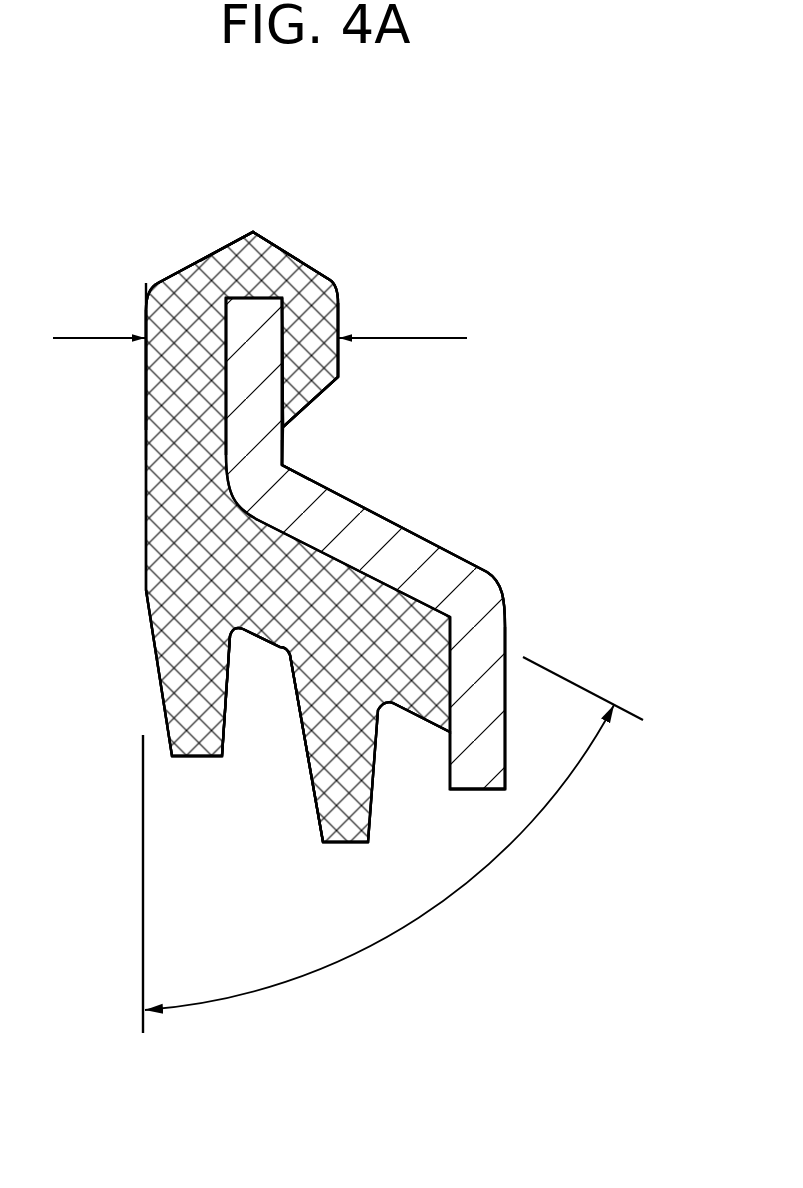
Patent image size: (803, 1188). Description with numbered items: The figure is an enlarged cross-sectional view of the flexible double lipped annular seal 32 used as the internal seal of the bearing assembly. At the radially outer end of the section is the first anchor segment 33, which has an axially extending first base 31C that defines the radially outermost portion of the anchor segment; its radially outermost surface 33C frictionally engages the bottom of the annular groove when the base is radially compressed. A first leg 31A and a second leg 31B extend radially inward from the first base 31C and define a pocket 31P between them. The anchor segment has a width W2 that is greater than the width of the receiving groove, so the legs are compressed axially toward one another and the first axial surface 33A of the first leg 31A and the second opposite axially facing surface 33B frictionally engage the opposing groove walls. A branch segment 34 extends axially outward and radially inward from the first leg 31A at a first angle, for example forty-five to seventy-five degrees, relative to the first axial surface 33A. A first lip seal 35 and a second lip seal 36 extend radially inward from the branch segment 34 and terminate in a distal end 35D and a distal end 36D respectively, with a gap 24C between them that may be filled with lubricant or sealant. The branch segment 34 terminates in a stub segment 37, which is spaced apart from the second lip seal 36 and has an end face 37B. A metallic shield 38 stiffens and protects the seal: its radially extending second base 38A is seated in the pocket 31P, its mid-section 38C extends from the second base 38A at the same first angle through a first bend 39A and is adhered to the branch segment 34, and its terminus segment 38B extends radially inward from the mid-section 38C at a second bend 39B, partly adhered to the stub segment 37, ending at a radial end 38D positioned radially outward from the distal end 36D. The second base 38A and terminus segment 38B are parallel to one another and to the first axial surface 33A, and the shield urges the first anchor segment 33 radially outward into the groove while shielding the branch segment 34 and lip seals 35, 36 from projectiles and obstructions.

The flexible double lipped annular seal 32 is at (521, 285).
The first anchor segment 33 is at (387, 203).
The first axial surface 33A is at (147, 372).
The second opposite axially facing surface 33B is at (338, 317).
The radially outermost surface 33C is at (222, 248).
The first leg 31A is at (192, 377).
The second leg 31B is at (299, 348).
The first base 31C is at (277, 275).
The pocket 31P is at (230, 375).
The branch segment 34 is at (257, 577).
The first lip seal 35 is at (192, 679).
The distal end 35D is at (205, 757).
The second lip seal 36 is at (333, 793).
The distal end 36D is at (343, 843).
The stub segment 37 is at (411, 698).
The end face 37B is at (452, 700).
The metallic shield 38 is at (390, 543).
The second base 38A is at (256, 373).
The terminus segment 38B is at (483, 677).
The mid-section 38C is at (407, 555).
The radial end 38D is at (490, 790).
The first bend 39A is at (257, 473).
The second bend 39B is at (474, 590).
The gap 24C is at (262, 770).
The width W2 is at (68, 338).